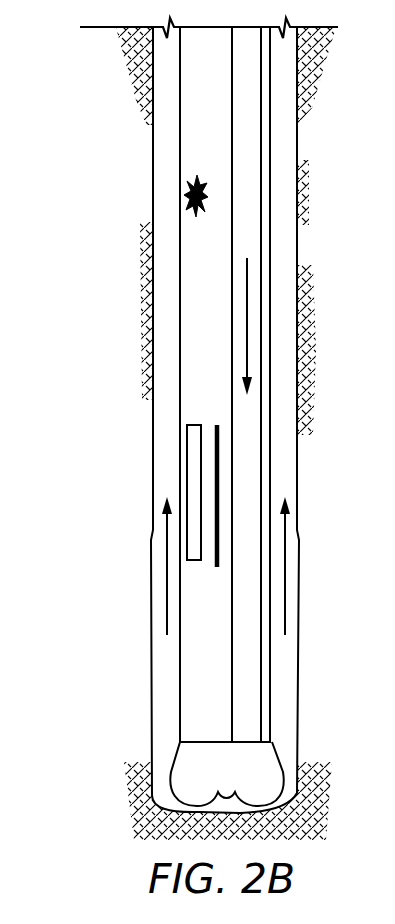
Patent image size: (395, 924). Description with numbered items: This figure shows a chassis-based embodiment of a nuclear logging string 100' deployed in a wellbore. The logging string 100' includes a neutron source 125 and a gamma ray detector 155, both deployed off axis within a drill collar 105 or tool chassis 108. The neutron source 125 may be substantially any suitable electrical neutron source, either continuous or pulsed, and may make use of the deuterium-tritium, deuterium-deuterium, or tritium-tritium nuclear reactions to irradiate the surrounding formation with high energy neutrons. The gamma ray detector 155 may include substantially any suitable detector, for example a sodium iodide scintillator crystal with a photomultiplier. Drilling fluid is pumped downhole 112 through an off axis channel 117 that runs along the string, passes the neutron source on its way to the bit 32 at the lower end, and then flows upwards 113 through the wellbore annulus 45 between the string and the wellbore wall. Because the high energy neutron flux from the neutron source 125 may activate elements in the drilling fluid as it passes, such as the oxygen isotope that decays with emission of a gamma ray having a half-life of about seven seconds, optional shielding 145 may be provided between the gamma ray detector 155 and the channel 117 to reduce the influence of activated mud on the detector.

The logging string 100' is at (182, 76).
The wellbore annulus 45 is at (287, 181).
The drill collar 105 is at (180, 668).
The off axis channel 117 is at (247, 114).
The tool chassis 108 is at (205, 310).
The neutron source 125 is at (195, 193).
The downhole pumping of drilling fluid 112 is at (248, 337).
The gamma ray detector 155 is at (194, 482).
The shielding 145 is at (218, 488).
The upward flow 113 is at (285, 568).
The bit 32 is at (242, 782).